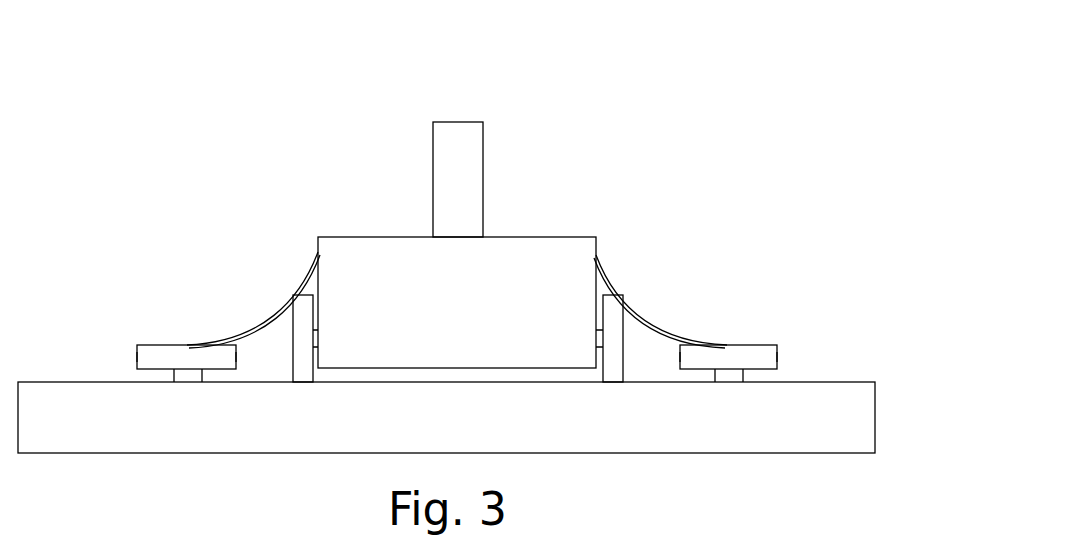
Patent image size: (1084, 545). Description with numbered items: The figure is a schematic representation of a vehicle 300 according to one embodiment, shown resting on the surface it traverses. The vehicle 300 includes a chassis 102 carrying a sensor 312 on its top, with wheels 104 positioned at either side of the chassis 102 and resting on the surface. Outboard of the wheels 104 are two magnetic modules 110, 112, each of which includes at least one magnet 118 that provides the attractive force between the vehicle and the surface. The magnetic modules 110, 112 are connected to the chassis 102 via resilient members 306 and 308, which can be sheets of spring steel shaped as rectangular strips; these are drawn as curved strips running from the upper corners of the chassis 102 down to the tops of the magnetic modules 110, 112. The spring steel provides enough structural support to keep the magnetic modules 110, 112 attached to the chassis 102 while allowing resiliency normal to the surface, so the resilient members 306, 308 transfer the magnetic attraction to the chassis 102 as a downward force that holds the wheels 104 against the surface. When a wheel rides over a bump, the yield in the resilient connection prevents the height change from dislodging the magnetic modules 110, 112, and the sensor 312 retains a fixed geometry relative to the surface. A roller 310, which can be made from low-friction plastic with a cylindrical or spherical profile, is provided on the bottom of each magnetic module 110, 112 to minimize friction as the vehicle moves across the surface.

The vehicle 300 is at (446, 226).
The chassis 102 is at (457, 261).
The sensor 312 is at (409, 179).
The wheels 104 is at (450, 295).
The resilient member 308 is at (253, 296).
The resilient member 306 is at (660, 287).
The magnetic module 112 is at (178, 316).
The magnetic module 110 is at (728, 316).
The magnet 118 is at (462, 333).
The roller 310 is at (456, 364).